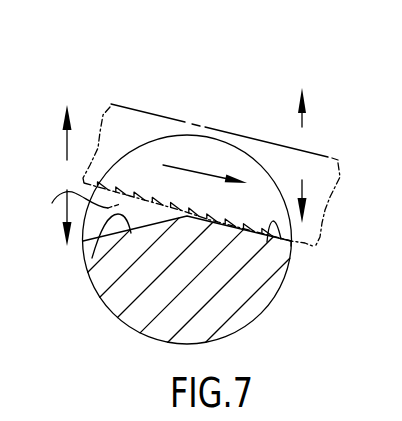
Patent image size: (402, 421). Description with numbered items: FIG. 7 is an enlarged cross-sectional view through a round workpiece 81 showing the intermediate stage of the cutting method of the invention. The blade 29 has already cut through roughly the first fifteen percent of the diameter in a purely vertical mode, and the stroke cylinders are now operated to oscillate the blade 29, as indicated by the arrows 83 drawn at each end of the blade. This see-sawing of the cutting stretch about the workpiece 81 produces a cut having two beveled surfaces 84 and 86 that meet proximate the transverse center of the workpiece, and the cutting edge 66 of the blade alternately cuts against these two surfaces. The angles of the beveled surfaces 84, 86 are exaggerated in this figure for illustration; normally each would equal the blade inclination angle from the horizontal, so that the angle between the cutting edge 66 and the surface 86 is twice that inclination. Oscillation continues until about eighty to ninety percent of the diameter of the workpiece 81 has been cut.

The blade 29 is at (157, 128).
The cutting edge 66 is at (73, 206).
The workpiece 81 is at (215, 138).
The arrows 83 is at (67, 137).
The beveled surface 84 is at (291, 244).
The beveled surface 86 is at (90, 270).